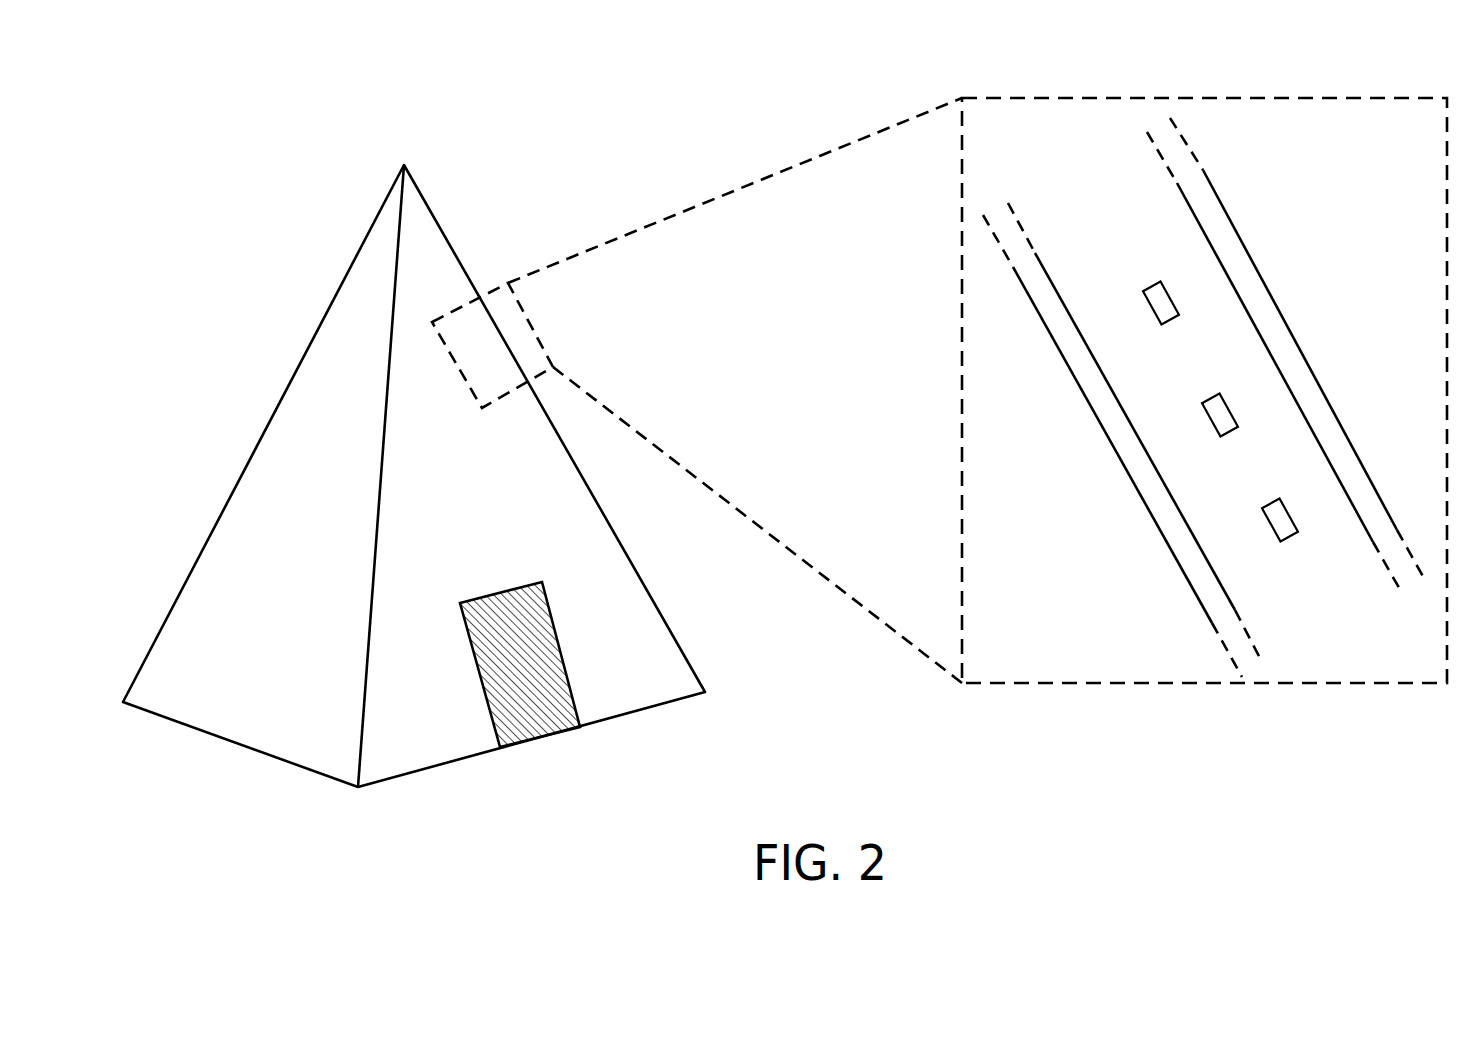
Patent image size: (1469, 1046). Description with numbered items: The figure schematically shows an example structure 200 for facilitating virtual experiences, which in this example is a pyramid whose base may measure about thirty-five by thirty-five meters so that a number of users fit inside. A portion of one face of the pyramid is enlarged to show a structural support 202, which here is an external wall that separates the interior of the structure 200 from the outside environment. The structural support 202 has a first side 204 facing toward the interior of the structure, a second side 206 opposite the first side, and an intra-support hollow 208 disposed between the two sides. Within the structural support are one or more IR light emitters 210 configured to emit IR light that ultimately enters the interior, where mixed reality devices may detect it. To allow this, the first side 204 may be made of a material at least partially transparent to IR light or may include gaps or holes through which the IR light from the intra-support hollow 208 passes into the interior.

The structure 200 is at (352, 265).
The structural support 202 is at (1063, 98).
The first side 204 is at (1105, 435).
The second side 206 is at (1258, 272).
The intra-support hollow 208 is at (1116, 227).
The IR light emitters 210 is at (1168, 322).